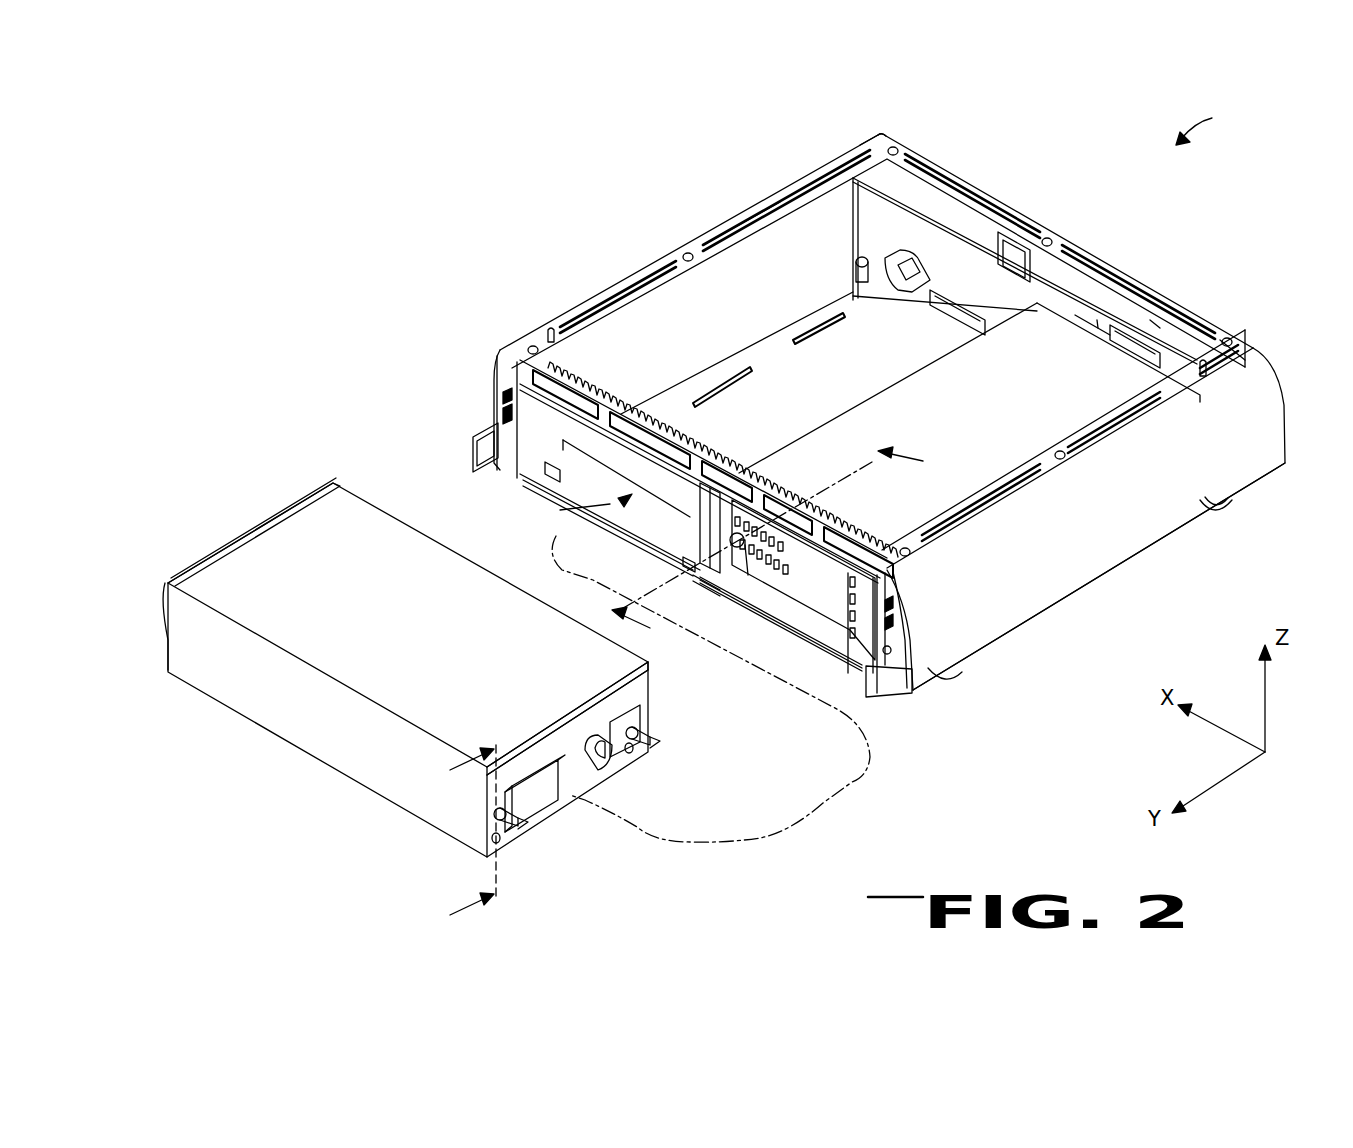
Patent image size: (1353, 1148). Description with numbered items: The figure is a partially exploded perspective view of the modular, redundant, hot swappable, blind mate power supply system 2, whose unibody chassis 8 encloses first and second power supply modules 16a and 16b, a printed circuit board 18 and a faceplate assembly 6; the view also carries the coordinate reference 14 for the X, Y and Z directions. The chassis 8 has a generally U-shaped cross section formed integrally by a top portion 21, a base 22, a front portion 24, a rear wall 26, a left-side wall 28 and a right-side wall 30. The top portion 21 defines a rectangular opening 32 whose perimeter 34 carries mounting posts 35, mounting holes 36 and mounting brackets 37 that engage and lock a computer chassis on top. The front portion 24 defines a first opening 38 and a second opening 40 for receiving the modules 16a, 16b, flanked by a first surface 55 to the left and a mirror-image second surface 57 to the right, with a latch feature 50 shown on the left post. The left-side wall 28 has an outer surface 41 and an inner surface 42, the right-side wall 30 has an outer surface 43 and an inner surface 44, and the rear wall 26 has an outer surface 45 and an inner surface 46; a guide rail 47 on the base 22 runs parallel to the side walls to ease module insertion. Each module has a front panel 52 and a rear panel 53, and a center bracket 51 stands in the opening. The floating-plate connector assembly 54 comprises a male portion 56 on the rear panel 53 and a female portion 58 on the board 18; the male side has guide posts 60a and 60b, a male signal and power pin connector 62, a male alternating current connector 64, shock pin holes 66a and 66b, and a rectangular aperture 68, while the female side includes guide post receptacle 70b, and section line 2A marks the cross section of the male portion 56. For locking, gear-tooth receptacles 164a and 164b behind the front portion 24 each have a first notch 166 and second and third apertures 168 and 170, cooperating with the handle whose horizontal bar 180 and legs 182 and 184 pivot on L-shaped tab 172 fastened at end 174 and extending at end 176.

The power supply system 2 is at (1203, 126).
The section line 2A— 2A is at (455, 836).
The faceplate assembly 6 is at (767, 548).
The unibody chassis 8 is at (1210, 510).
The chassis 14 is at (1140, 560).
The first power supply module 16a is at (408, 670).
The second power supply module 16b is at (1076, 352).
The printed circuit board 18 is at (953, 228).
The top portion 21 is at (860, 150).
The base 22 is at (901, 335).
The front portion 24 is at (505, 365).
The rear wall 26 is at (1185, 335).
The left-side wall 28 is at (829, 354).
The right-side wall 30 is at (1220, 388).
The rectangular opening 32 is at (805, 212).
The perimeter 34 is at (890, 135).
The mounting posts 35 is at (550, 328).
The mounting holes 36 is at (896, 150).
The mounting brackets 37 is at (575, 375).
The first opening 38 is at (1060, 450).
The second opening 40 is at (835, 600).
The outer surface of left-side wall 41 is at (727, 225).
The inner surface of left-side wall 42 is at (668, 300).
The outer surface of right-side wall 43 is at (1050, 585).
The inner surface of right-side wall 44 is at (1015, 472).
The outer surface of rear wall 45 is at (1137, 287).
The inner surface of rear wall 46 is at (1150, 320).
The guide rails 47 is at (720, 385).
The latch slots 50 is at (500, 410).
The center bracket 51 is at (713, 530).
The front panel 52 is at (245, 535).
The rear panel 53 is at (1075, 318).
The floating-plate connector assembly 54 is at (565, 810).
The first surface 55 is at (473, 433).
The male portion 56 is at (575, 748).
The second surface 57 is at (912, 617).
The female portion 58 is at (930, 248).
The guide post 60a is at (525, 825).
The guide post 60b is at (665, 740).
The male signal and power pin connector 62 is at (545, 770).
The male alternating current connector 64 is at (612, 760).
The shock pin hole 66a is at (490, 843).
The shock pin hole 66b is at (640, 752).
The rectangular aperture 68 is at (612, 740).
The guide post receptacle 70b is at (856, 265).
The gear-tooth receptacle 164a is at (530, 478).
The gear-tooth receptacle 164b is at (698, 578).
The first notch 166 is at (545, 492).
The second aperture 168 is at (632, 487).
The third aperture 170 is at (555, 450).
The L-shaped tab 172 is at (782, 600).
The fastened end of tab 174 is at (775, 540).
The extending end of tab 176 is at (738, 568).
The horizontal bar 180 is at (197, 560).
The leg 182 is at (860, 612).
The leg 184 is at (687, 560).